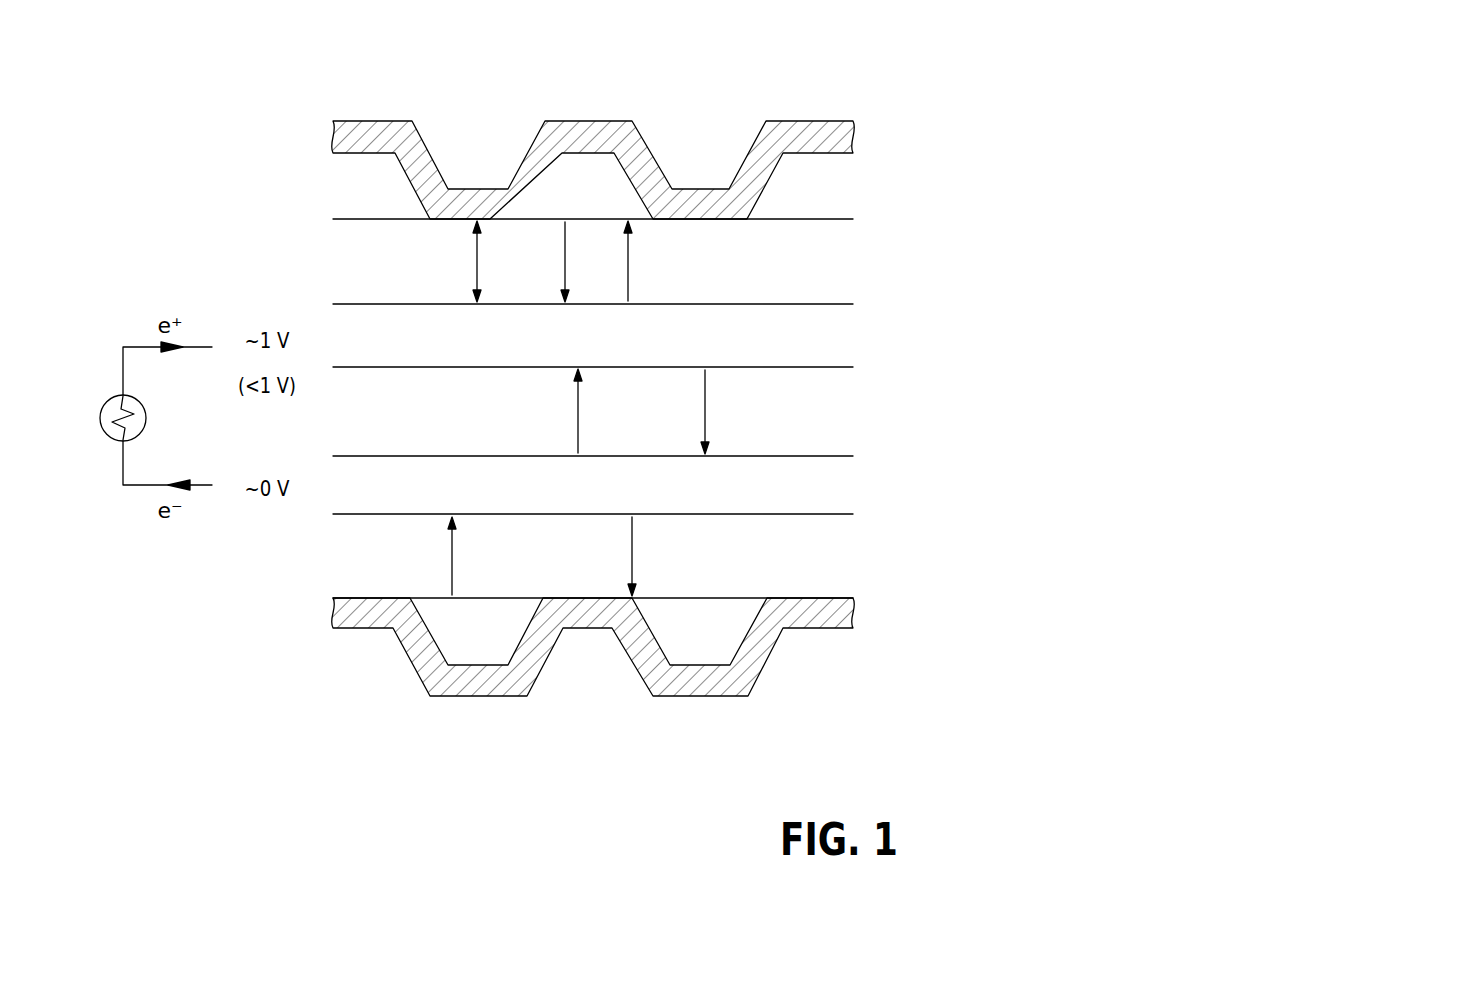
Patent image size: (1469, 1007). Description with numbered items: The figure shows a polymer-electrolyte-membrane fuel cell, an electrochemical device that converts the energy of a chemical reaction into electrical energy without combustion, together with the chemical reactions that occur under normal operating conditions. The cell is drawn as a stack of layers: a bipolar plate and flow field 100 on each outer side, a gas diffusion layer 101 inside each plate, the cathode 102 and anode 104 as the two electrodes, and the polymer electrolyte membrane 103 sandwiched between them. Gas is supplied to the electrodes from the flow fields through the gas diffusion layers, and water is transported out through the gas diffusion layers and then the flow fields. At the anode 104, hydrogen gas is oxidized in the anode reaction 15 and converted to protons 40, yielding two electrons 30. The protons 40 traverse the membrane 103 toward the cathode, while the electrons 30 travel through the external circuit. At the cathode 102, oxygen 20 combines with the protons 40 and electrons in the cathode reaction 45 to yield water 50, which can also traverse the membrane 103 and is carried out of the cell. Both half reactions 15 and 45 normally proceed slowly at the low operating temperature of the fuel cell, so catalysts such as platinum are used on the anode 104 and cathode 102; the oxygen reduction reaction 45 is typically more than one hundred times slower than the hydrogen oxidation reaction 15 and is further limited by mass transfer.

The oxygen 20 is at (482, 112).
The bipolar plate and flow field 100 is at (870, 168).
The gas diffusion layer 101 is at (870, 257).
The cathode 102 is at (851, 337).
The polymer electrolyte membrane 103 is at (791, 412).
The anode 104 is at (869, 486).
The water 50 is at (361, 222).
The electrons 30 is at (458, 265).
The cathode reaction 45 is at (421, 333).
The protons 40 is at (535, 416).
The anode reaction 15 is at (478, 483).